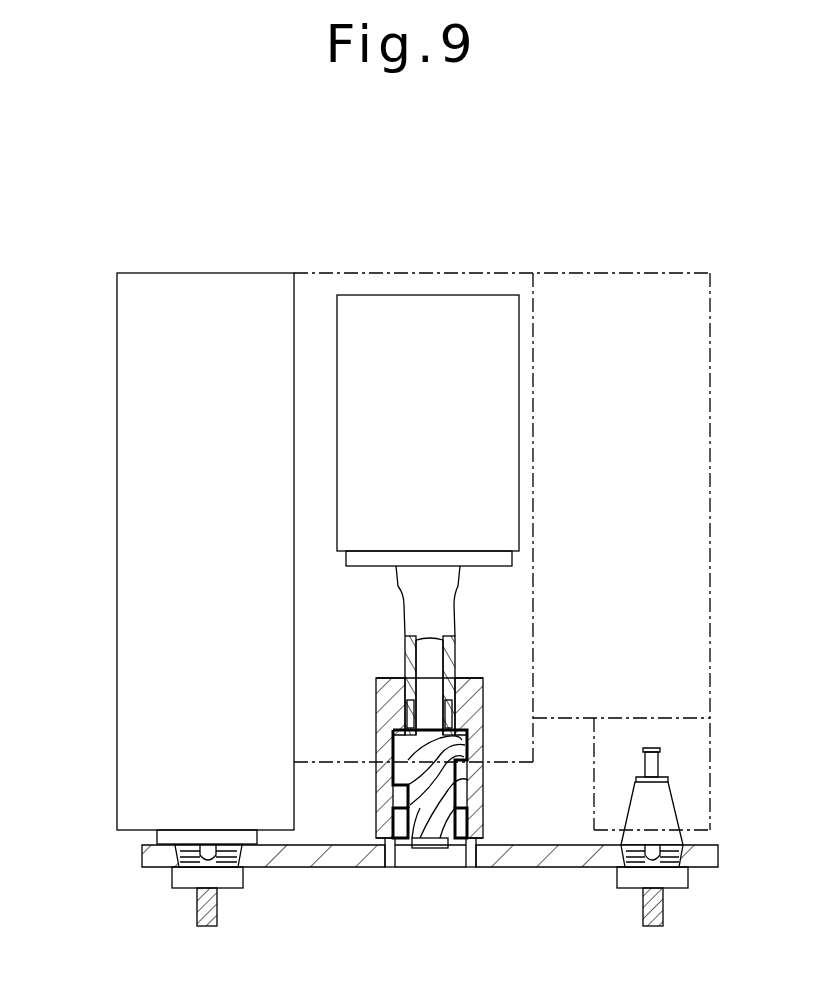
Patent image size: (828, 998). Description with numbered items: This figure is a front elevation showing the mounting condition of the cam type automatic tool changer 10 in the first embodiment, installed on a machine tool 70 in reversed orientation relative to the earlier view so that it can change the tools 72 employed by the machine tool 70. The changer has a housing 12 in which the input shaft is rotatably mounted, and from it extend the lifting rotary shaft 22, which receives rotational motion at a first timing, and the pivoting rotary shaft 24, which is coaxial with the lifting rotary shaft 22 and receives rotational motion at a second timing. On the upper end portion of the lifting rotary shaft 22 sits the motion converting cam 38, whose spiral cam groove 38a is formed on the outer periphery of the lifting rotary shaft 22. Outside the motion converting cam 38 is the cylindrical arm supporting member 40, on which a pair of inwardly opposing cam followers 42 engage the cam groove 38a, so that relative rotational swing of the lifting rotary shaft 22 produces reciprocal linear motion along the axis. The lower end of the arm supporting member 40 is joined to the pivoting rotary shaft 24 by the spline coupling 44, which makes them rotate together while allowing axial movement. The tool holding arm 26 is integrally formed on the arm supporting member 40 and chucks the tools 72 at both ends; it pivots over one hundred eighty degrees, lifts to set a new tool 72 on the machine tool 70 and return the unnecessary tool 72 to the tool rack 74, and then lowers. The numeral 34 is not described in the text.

The cam type automatic tool changer 10 is at (345, 288).
The housing 12 is at (472, 306).
The rotary shaft for lifting 22 is at (432, 662).
The rotary shaft for pivoting 24 is at (408, 646).
The tool holding arm 26 is at (333, 868).
The insert 34 is at (448, 735).
The motion converting cam 38 is at (447, 802).
The cam groove 38a is at (440, 775).
The arm supporting member 40 is at (374, 798).
The cam follower 42 is at (468, 823).
The spline coupling 44 is at (484, 690).
The machine tool 70 is at (145, 496).
The tool 72 is at (232, 882).
The tool rack 74 is at (655, 285).